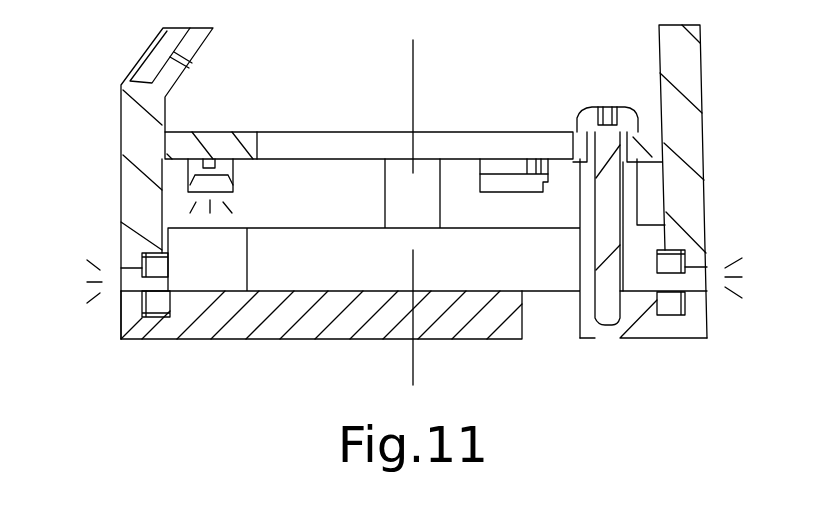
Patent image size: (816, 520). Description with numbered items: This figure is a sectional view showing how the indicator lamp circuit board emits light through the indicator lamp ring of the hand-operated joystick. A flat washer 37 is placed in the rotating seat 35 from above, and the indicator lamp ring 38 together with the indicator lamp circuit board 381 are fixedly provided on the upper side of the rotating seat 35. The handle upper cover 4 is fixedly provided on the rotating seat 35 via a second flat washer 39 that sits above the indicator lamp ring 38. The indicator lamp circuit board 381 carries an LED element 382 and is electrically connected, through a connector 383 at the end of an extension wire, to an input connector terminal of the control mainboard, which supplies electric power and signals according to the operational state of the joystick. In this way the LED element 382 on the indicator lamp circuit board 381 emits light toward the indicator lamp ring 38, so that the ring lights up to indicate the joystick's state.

The handle upper cover 4 is at (130, 135).
The rotating seat 35 is at (207, 332).
The flat washer 37 is at (140, 312).
The indicator lamp ring 38 is at (354, 253).
The flat washer 39 is at (150, 267).
The indicator lamp circuit board 381 is at (313, 140).
The LED element 382 is at (220, 180).
The connector 383 is at (500, 165).